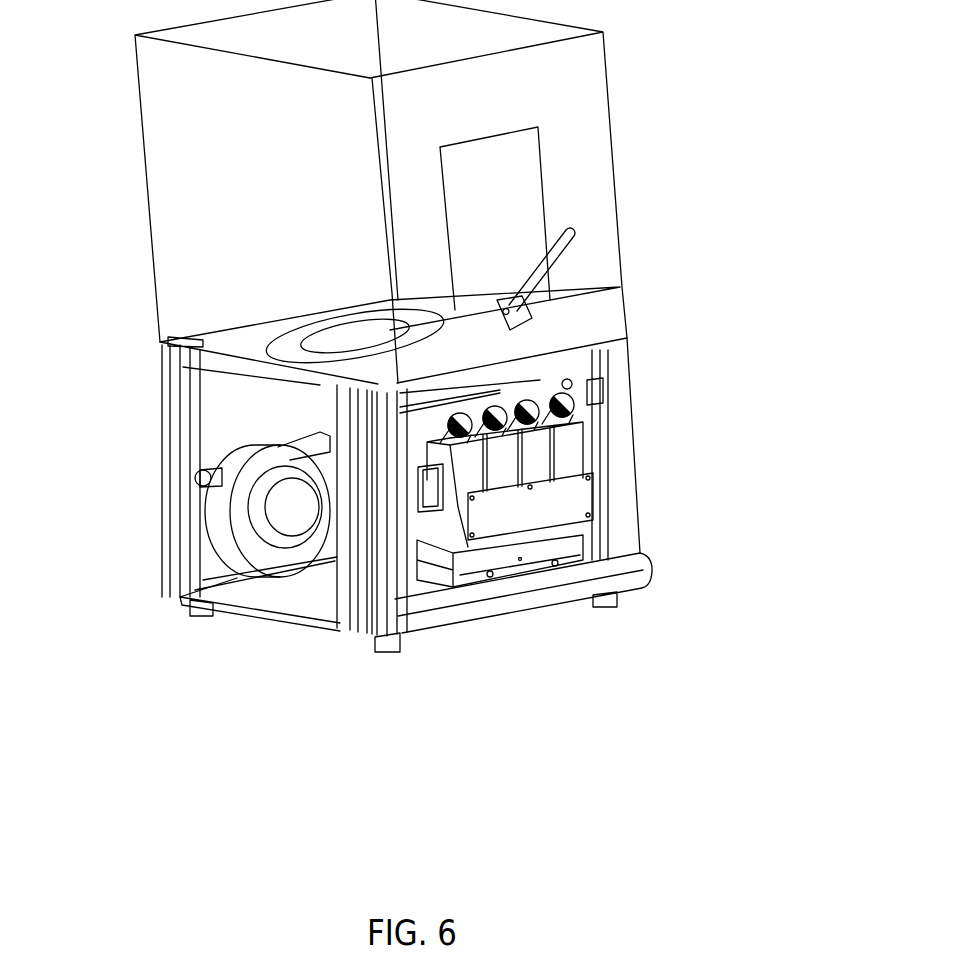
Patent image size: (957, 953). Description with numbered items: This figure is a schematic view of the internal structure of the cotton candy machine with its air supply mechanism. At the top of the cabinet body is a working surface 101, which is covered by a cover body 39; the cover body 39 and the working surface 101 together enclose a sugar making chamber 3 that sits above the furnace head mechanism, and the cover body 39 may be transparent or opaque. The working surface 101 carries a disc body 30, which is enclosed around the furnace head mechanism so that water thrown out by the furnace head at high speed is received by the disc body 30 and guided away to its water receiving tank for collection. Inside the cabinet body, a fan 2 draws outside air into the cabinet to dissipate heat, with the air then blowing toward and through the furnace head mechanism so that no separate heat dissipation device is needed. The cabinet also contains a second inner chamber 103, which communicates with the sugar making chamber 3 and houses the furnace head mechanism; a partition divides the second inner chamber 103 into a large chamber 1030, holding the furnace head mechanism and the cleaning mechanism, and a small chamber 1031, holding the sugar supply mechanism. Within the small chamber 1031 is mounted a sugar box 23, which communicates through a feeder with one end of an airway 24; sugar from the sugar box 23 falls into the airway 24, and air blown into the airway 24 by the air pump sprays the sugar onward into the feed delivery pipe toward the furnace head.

The cover body 39 is at (143, 181).
The sugar making chamber 3 is at (500, 197).
The working surface 101 is at (230, 340).
The disc body 30 is at (327, 337).
The fan 2 is at (243, 520).
The sugar box 23 is at (573, 453).
The airway 24 is at (523, 568).
The second inner chamber 103 is at (416, 690).
The large chamber 1030 is at (281, 593).
The small chamber 1031 is at (513, 649).